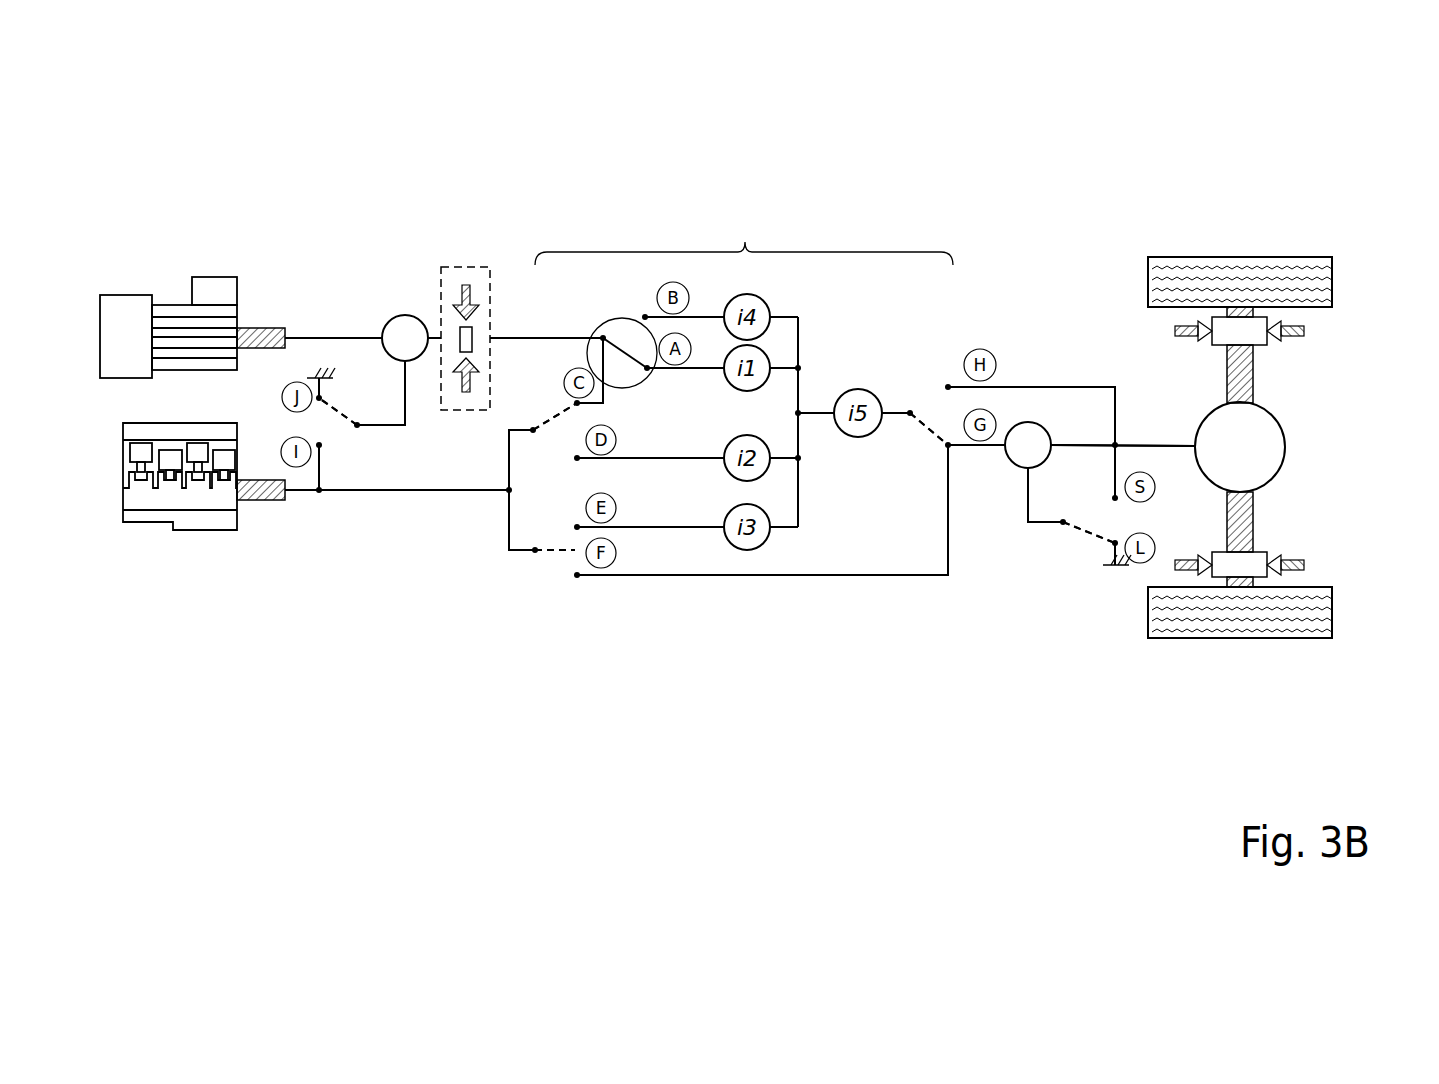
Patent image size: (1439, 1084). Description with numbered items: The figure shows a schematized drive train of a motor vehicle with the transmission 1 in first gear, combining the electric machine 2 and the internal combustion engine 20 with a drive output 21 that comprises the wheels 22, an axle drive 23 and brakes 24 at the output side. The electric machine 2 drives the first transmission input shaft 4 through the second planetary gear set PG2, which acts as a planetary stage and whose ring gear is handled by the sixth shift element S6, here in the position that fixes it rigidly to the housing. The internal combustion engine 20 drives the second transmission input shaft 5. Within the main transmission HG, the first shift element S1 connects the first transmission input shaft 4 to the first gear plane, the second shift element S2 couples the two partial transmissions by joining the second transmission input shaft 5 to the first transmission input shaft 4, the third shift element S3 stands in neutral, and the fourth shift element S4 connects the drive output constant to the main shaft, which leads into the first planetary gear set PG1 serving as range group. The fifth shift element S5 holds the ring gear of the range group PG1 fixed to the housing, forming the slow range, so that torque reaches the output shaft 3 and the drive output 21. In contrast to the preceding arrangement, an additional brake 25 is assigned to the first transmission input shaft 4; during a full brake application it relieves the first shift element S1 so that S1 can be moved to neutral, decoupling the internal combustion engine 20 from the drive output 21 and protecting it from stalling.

The transmission 1 is at (1020, 219).
The electric machine 2 is at (217, 290).
The output shaft 3 is at (1155, 445).
The first transmission input shaft 4 is at (512, 335).
The second transmission input shaft 5 is at (438, 492).
The internal combustion engine 20 is at (205, 527).
The drive output 21 is at (1247, 254).
The wheels 22 is at (1197, 280).
The axle drive 23 is at (1240, 447).
The brakes 24 is at (1250, 333).
The brake 25 is at (462, 267).
The first planetary gear set PG1 is at (1008, 474).
The second planetary gear set PG2 is at (386, 306).
The main transmission HG is at (745, 242).
The first shift element S1 is at (626, 378).
The second shift element S2 is at (546, 398).
The third shift element S3 is at (548, 563).
The fourth shift element S4 is at (932, 398).
The fifth shift element S5 is at (1076, 553).
The sixth shift element S6 is at (338, 436).